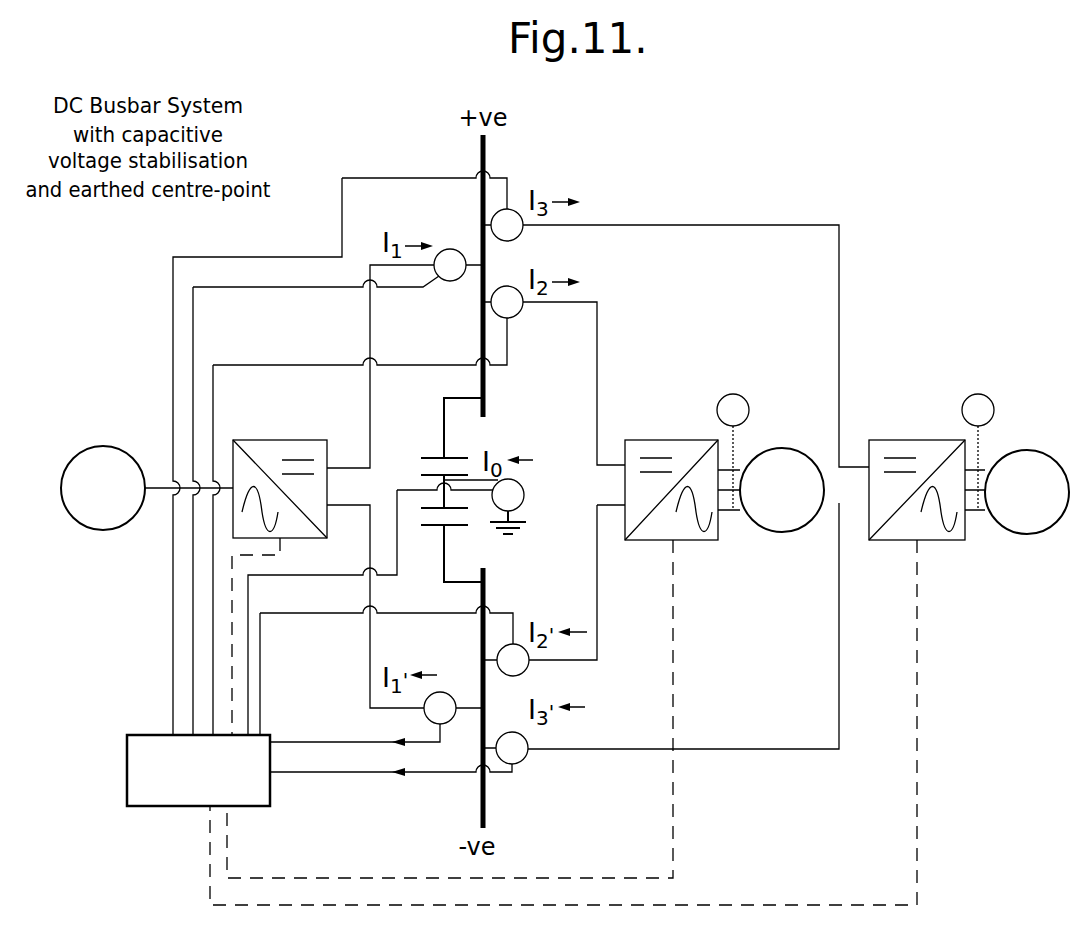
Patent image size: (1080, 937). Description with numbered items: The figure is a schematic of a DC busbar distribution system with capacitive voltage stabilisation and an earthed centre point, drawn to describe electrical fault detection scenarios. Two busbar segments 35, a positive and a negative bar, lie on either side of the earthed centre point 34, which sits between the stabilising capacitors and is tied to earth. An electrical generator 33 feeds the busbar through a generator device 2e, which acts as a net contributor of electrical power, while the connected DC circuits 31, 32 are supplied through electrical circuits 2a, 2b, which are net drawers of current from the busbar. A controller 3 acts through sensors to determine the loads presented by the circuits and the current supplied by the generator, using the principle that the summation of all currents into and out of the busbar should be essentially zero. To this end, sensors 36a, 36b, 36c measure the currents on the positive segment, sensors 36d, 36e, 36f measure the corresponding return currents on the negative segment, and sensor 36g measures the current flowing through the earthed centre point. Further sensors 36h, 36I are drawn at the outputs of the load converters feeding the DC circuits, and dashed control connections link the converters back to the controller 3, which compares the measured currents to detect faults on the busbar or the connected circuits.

The busbar segments 35 is at (486, 152).
The earthed centre point 34 is at (471, 442).
The sensor 36a is at (450, 281).
The sensor 36b is at (519, 315).
The sensor 36c is at (520, 236).
The sensor 36d is at (428, 720).
The sensor 36e is at (527, 672).
The sensor 36f is at (526, 760).
The sensor 36g is at (524, 497).
The load a current sensor 36h is at (726, 396).
The load b current sensor 36I is at (983, 396).
The electrical generator 33 is at (80, 515).
The generator device 2e is at (270, 442).
The electrical circuit 2a is at (700, 541).
The electrical circuit 2b is at (945, 541).
The DC circuit 31 is at (800, 521).
The DC circuit 32 is at (1050, 518).
The controller 3 is at (270, 790).